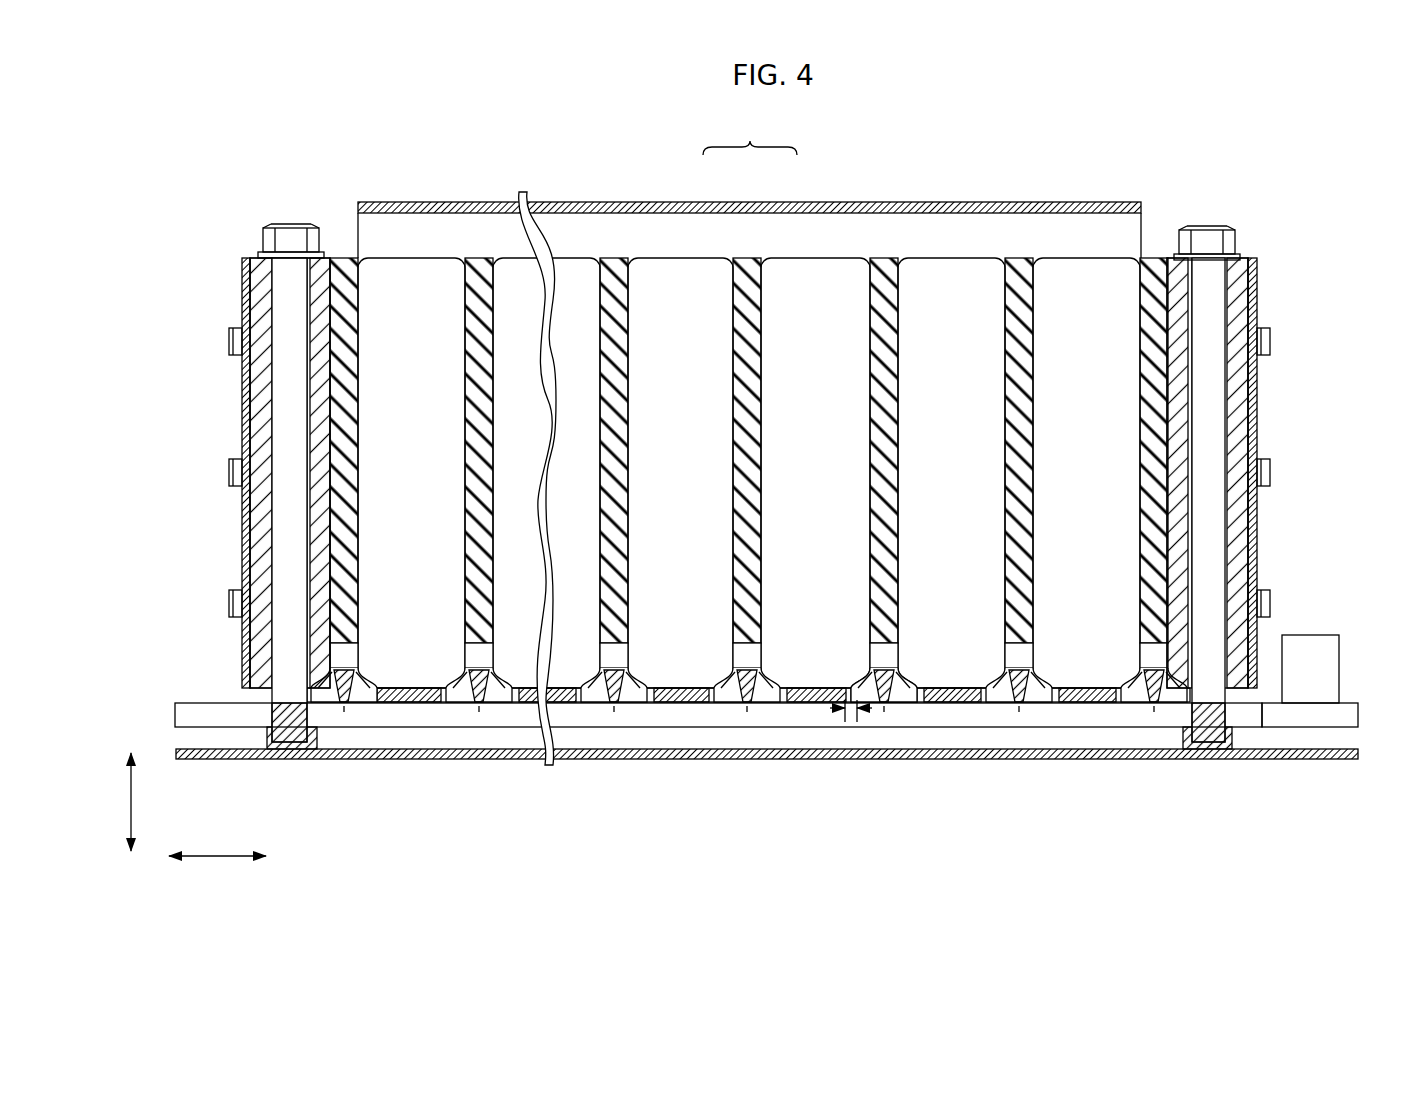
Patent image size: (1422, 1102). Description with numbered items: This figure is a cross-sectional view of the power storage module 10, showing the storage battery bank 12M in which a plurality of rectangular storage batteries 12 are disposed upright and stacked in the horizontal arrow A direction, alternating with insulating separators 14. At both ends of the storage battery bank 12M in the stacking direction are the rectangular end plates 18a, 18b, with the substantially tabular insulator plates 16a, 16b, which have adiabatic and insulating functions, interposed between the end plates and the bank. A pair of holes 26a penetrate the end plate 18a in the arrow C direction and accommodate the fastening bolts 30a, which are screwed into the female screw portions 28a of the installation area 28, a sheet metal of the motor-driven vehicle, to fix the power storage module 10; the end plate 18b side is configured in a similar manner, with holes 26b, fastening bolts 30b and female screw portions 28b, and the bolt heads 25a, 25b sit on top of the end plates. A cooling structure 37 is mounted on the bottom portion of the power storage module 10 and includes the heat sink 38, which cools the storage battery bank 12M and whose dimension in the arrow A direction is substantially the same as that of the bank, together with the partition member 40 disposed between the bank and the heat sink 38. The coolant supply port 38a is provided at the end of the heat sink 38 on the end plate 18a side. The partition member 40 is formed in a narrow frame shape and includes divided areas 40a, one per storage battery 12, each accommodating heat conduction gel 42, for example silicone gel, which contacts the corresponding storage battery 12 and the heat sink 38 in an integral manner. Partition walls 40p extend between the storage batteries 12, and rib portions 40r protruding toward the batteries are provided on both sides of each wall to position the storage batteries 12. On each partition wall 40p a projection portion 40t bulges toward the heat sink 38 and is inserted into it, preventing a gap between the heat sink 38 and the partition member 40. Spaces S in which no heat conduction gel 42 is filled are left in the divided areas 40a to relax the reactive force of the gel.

The power storage module 10 is at (680, 119).
The storage battery 12 is at (710, 268).
The storage battery bank 12M is at (750, 132).
The separator 14 is at (740, 468).
The insulator plate 16a is at (1152, 445).
The insulator plate 16b is at (352, 322).
The end plate 18a is at (1245, 300).
The end plate 18b is at (250, 280).
The bolt head 25a is at (1240, 250).
The bolt head 25b is at (262, 222).
The hole 26a is at (1192, 412).
The hole 26b is at (307, 393).
The installation area 28 is at (1253, 763).
The female screw portion 28a is at (1186, 738).
The female screw portion 28b is at (322, 737).
The fastening bolt 30a is at (1208, 317).
The fastening bolt 30b is at (288, 297).
The cooling structure 37 is at (1064, 737).
The heat sink 38 is at (1323, 731).
The coolant supply port 38a is at (1339, 652).
The partition member 40 is at (879, 721).
The divided area 40a is at (915, 700).
The partition wall 40p is at (880, 670).
The rib portion 40r is at (870, 676).
The projection portion 40t is at (881, 702).
The heat conduction gel 42 is at (965, 688).
The space S is at (850, 712).
The arrow A direction A is at (217, 840).
The arrow C direction C is at (118, 802).